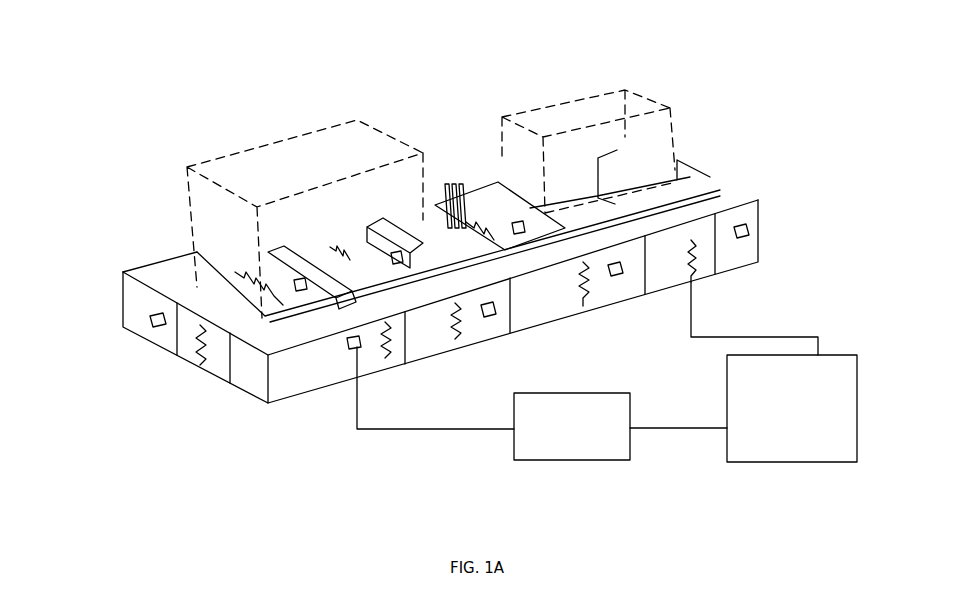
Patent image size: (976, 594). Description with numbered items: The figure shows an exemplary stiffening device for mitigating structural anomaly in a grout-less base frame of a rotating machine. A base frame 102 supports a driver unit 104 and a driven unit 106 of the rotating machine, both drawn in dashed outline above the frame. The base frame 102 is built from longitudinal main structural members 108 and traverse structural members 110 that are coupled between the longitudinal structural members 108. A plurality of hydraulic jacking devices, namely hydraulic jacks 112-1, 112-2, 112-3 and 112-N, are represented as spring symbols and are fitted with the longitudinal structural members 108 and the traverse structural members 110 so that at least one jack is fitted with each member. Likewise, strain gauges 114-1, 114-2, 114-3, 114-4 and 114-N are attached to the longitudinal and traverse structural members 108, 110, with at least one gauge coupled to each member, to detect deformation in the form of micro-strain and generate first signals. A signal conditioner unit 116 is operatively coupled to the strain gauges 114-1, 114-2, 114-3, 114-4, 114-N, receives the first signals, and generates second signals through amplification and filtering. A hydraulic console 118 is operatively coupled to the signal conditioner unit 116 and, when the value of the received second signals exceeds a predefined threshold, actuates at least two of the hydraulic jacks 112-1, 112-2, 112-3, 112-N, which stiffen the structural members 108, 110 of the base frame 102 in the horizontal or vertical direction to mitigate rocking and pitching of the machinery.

The base frame 102 is at (764, 199).
The driver unit 104 is at (290, 146).
The driven unit 106 is at (670, 131).
The longitudinal main structural members 108 is at (560, 226).
The traverse structural members 110 is at (367, 297).
The hydraulic jack 112-1 is at (398, 352).
The hydraulic jack 112-2 is at (465, 337).
The hydraulic jack 112-3 is at (481, 227).
The hydraulic jack 112-N is at (697, 249).
The strain gauge 114-1 is at (349, 352).
The strain gauge 114-2 is at (505, 316).
The strain gauge 114-3 is at (292, 282).
The strain gauge 114-4 is at (396, 250).
The strain gauge 114-N is at (150, 324).
The signal conditioner unit 116 is at (529, 452).
The hydraulic console 118 is at (765, 450).